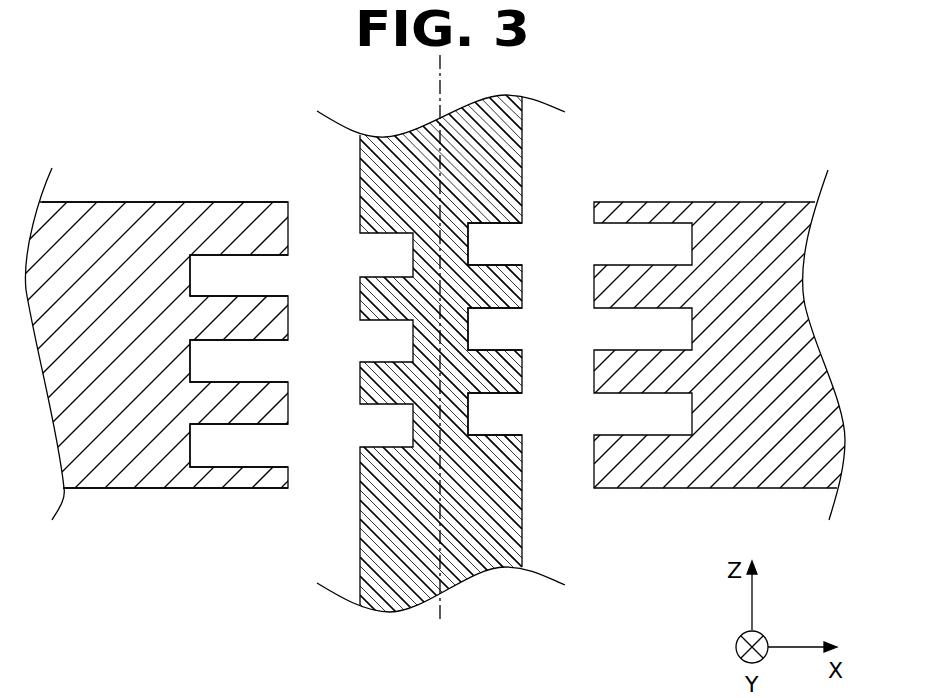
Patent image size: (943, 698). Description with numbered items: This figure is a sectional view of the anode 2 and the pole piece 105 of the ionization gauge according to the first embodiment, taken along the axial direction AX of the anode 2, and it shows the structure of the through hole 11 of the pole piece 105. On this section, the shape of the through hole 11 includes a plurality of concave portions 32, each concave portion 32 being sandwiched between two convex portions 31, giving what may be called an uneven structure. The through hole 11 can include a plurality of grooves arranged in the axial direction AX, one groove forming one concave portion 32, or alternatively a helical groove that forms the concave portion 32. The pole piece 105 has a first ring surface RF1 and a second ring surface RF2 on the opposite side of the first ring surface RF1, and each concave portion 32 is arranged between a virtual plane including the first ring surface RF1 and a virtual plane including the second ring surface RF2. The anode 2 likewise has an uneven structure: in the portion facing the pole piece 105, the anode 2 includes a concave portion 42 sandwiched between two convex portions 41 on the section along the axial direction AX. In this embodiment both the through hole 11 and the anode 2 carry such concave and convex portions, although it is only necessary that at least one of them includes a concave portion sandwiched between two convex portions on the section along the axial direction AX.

The anode 2 is at (358, 547).
The through hole 11 is at (561, 482).
The convex portions 31 is at (290, 227).
The concave portion 32 is at (191, 273).
The convex portions 41 is at (523, 193).
The concave portion 42 is at (469, 241).
The pole piece 105 is at (188, 521).
The axial direction AX is at (437, 88).
The first ring surface RF1 is at (130, 201).
The second ring surface RF2 is at (112, 490).